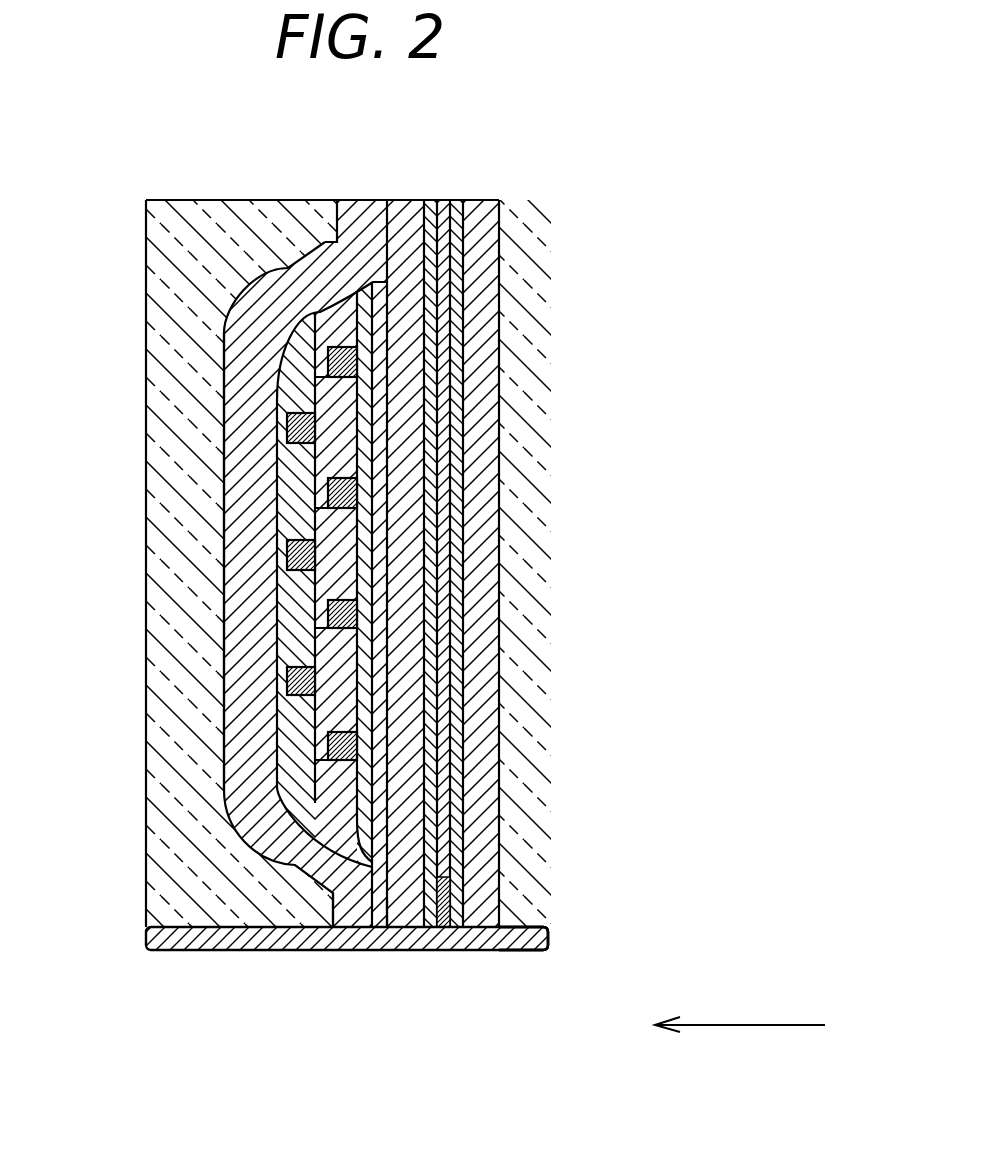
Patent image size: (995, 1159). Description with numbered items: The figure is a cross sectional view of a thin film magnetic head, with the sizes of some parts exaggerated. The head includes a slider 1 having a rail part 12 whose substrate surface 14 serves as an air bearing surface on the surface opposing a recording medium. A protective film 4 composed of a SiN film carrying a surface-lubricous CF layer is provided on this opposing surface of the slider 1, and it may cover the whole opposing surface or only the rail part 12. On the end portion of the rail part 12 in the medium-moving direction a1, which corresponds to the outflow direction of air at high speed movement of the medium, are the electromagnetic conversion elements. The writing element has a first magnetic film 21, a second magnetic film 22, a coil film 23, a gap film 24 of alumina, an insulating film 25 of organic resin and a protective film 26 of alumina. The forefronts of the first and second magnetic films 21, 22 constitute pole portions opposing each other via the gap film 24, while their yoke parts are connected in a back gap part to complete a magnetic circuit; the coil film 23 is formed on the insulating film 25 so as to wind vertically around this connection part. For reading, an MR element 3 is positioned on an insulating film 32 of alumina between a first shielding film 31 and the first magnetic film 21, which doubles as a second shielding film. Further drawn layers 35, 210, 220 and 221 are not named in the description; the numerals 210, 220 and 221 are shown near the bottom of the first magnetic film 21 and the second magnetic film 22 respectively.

The slider 1 is at (527, 270).
The MR element 3 is at (448, 905).
The protective film 4 is at (172, 950).
The rail part 12 is at (518, 950).
The substrate surface 14 is at (530, 978).
The first magnetic film 21 is at (403, 563).
The second magnetic film 22 is at (247, 833).
The coil film 23 is at (330, 615).
The gap film 24 is at (378, 497).
The insulating film 25 is at (363, 422).
The protective film 26 is at (160, 262).
The first shielding film 31 is at (483, 337).
The insulating film 32 is at (430, 628).
The electrolyte layer 35 is at (443, 705).
The first electrode bottom 210 is at (413, 950).
The second electrode bottom 220 is at (355, 950).
The second electrode side portion 221 is at (245, 762).
The medium-moving direction a1 is at (735, 1023).